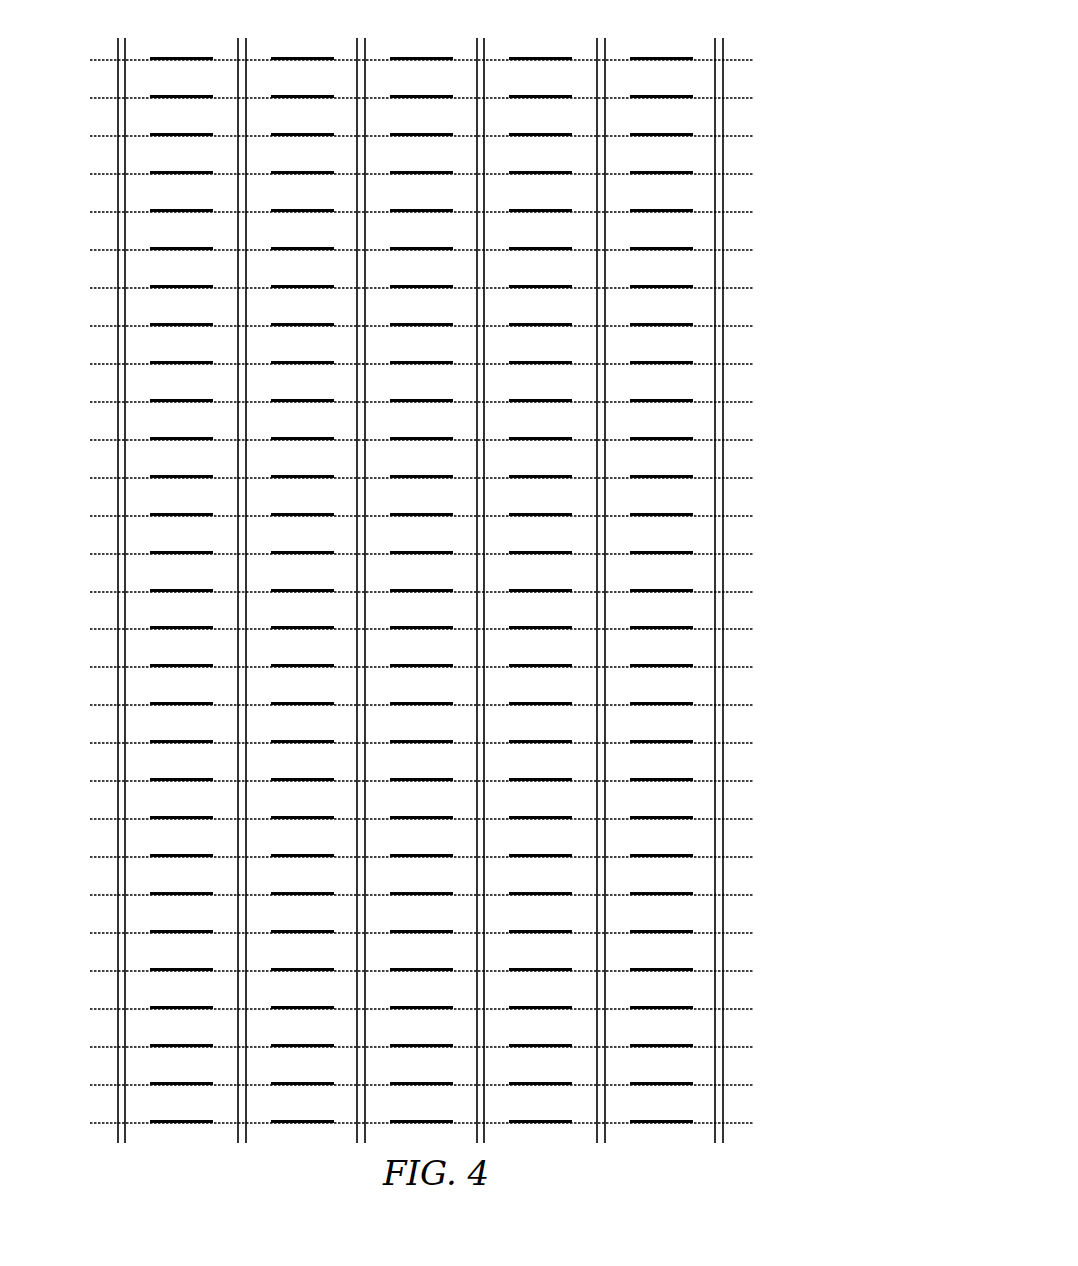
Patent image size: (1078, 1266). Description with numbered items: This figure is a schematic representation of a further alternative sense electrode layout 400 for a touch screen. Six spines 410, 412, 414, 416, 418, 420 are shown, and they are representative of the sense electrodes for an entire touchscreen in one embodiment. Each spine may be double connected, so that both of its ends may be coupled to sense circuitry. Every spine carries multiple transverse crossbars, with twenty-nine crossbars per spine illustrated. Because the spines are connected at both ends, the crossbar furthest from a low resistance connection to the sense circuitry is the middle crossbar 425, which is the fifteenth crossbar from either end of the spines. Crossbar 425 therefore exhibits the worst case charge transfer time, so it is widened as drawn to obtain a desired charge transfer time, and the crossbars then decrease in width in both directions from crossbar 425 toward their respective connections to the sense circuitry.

The sense electrode layout 400 is at (90, 25).
The spine 410 is at (126, 51).
The spine 412 is at (247, 51).
The spine 414 is at (366, 51).
The spine 416 is at (485, 51).
The spine 418 is at (606, 51).
The spine 420 is at (724, 51).
The middle crossbar 425 is at (703, 580).